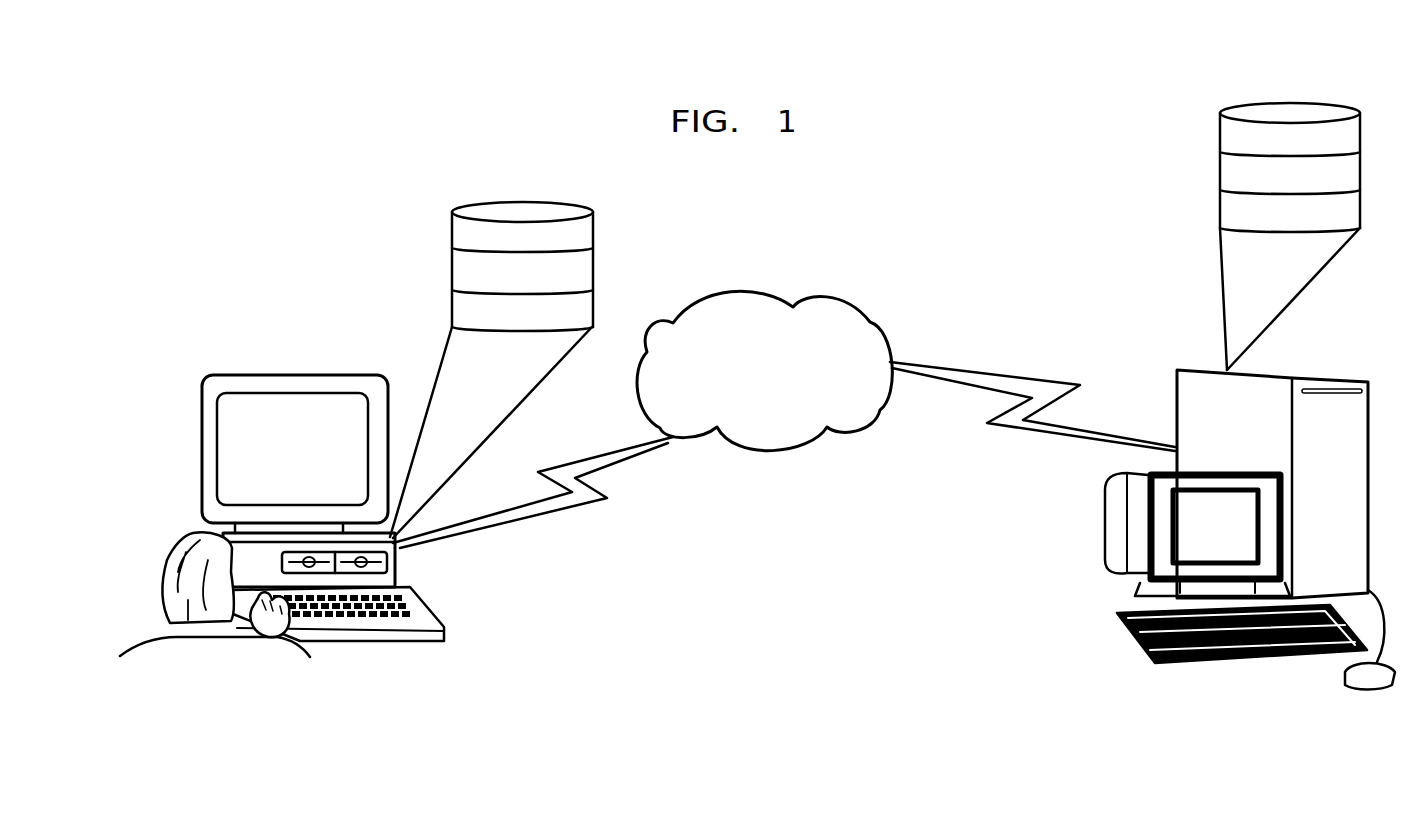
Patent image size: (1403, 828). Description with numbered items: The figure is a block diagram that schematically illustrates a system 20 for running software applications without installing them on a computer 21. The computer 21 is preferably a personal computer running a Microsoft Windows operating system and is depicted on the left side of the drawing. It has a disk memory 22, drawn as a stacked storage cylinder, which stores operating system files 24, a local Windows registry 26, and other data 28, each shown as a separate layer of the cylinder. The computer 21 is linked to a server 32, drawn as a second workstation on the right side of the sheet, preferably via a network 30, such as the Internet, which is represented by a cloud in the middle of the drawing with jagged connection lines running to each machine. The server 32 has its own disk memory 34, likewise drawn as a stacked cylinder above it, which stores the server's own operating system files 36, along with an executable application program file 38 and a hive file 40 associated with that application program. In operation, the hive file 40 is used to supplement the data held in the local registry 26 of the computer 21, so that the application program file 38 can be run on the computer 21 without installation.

The system 20 is at (206, 231).
The computer 21 is at (398, 570).
The disk memory 22 is at (470, 203).
The operating system files 24 is at (452, 228).
The local Windows registry 26 is at (452, 268).
The data 28 is at (452, 302).
The network 30 is at (833, 297).
The server 32 is at (1303, 370).
The disk memory 34 is at (1237, 107).
The operating system files 36 is at (1220, 130).
The executable application program file 38 is at (1220, 170).
The hive file 40 is at (1220, 205).